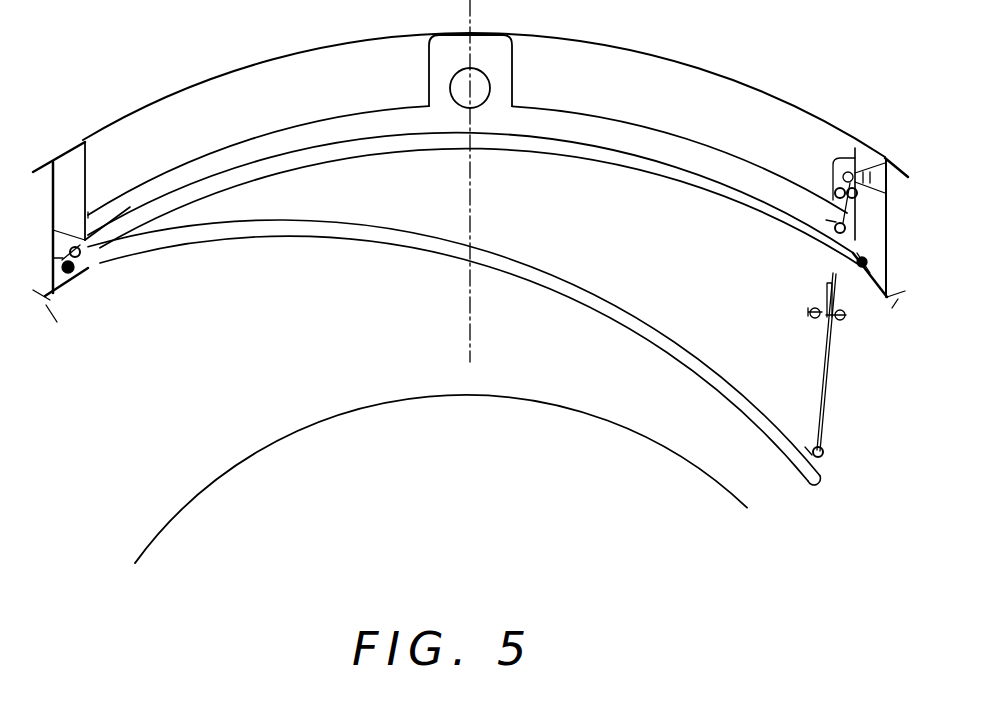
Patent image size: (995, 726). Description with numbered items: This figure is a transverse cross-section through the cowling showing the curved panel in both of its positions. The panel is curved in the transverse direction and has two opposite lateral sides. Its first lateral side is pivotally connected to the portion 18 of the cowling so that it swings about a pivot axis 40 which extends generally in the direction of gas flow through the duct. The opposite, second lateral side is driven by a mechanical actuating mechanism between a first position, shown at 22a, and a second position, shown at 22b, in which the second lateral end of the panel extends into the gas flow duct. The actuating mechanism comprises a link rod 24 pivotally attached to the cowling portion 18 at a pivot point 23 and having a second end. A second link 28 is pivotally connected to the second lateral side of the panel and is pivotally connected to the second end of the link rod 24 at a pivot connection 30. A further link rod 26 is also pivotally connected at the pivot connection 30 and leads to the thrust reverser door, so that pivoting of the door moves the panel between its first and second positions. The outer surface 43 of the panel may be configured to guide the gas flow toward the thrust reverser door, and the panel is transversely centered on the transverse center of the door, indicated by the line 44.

The portion of the cowling 18 is at (45, 160).
The pivot point 23 is at (867, 170).
The panel in first position 22a is at (647, 165).
The panel in second position 22b is at (345, 232).
The outer surface 43 is at (505, 257).
The line 44 is at (468, 331).
The pivot axis 40 is at (80, 275).
The link rod 26 is at (825, 292).
The pivot connection 30 is at (812, 313).
The link rod 24 is at (840, 287).
The second link 28 is at (828, 382).